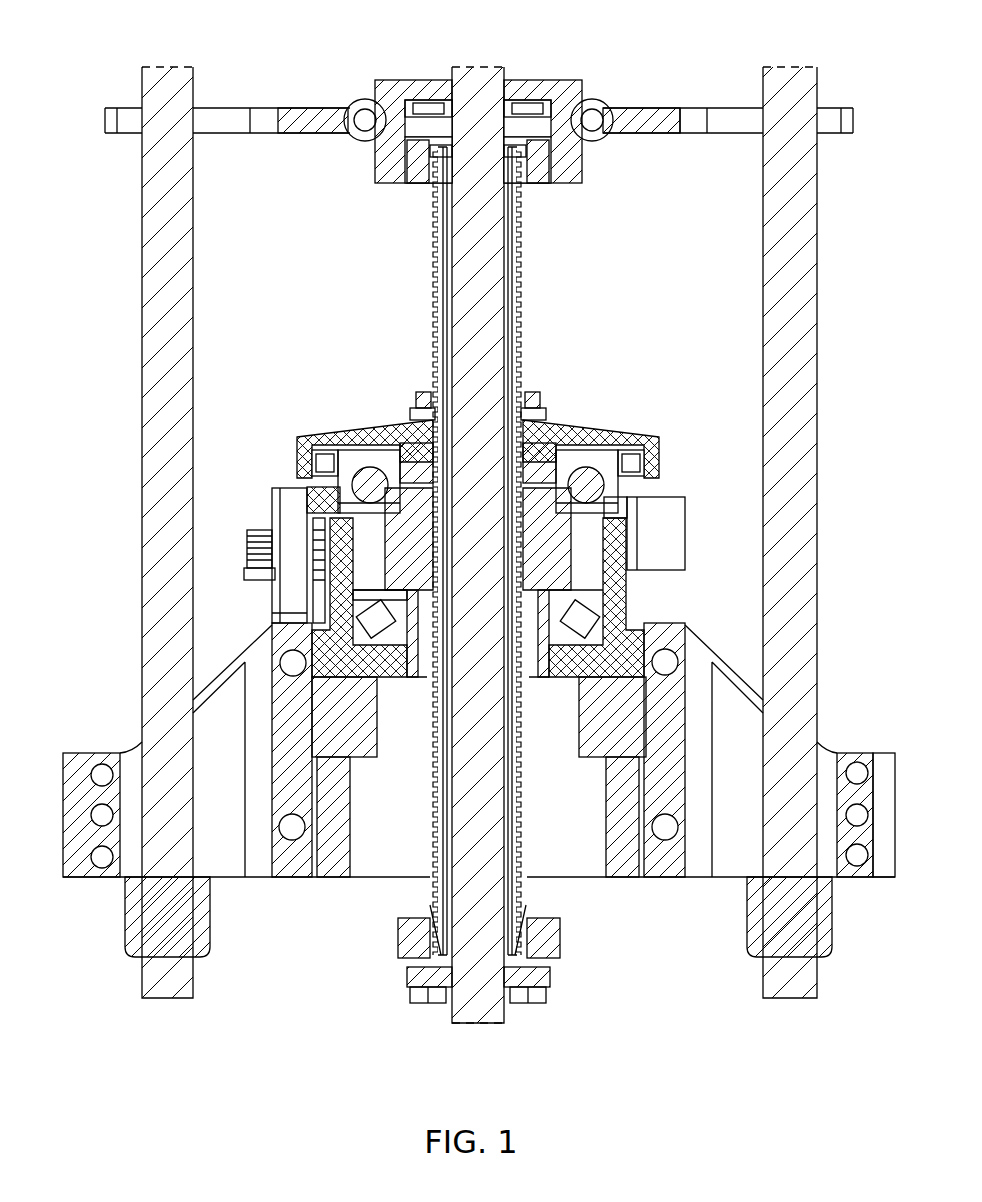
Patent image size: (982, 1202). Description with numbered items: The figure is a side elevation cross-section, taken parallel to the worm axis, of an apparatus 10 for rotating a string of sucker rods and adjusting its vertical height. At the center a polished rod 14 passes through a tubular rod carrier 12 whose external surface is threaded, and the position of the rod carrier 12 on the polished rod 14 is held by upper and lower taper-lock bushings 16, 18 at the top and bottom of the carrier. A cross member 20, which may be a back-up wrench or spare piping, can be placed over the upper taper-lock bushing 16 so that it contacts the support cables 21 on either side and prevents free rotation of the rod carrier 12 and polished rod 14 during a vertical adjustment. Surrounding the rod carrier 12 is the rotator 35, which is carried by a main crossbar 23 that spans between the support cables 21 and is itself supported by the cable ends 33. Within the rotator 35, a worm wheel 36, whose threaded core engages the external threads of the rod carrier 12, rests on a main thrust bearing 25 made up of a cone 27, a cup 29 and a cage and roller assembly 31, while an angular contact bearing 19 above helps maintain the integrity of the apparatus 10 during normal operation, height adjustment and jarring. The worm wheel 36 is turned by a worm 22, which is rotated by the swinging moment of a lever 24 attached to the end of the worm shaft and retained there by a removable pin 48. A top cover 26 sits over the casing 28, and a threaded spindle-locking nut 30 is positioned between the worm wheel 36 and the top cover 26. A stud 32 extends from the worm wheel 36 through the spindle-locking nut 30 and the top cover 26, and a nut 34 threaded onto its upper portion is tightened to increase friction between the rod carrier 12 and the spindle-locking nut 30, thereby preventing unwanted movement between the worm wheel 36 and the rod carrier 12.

The apparatus 10 is at (287, 42).
The tubular rod carrier 12 is at (525, 240).
The polished rod 14 is at (495, 300).
The upper taper-lock bushing 16 is at (440, 127).
The lower taper-lock bushing 18 is at (415, 976).
The angular contact bearing 19 is at (355, 466).
The cross member 20 is at (290, 117).
The support cables 21 is at (800, 212).
The worm 22 is at (240, 546).
The main crossbar 23 is at (740, 736).
The lever 24 is at (290, 510).
The main thrust bearing 25 is at (565, 602).
The top cover 26 is at (342, 436).
The cone 27 is at (395, 604).
The casing 28 is at (632, 642).
The cup 29 is at (360, 644).
The threaded spindle-locking nut 30 is at (545, 466).
The cage and roller assembly 31 is at (377, 625).
The stud 32 is at (422, 394).
The cable ends 33 is at (130, 928).
The nut 34 is at (410, 407).
The rotator 35 is at (640, 440).
The worm wheel 36 is at (550, 536).
The pin 48 is at (250, 580).